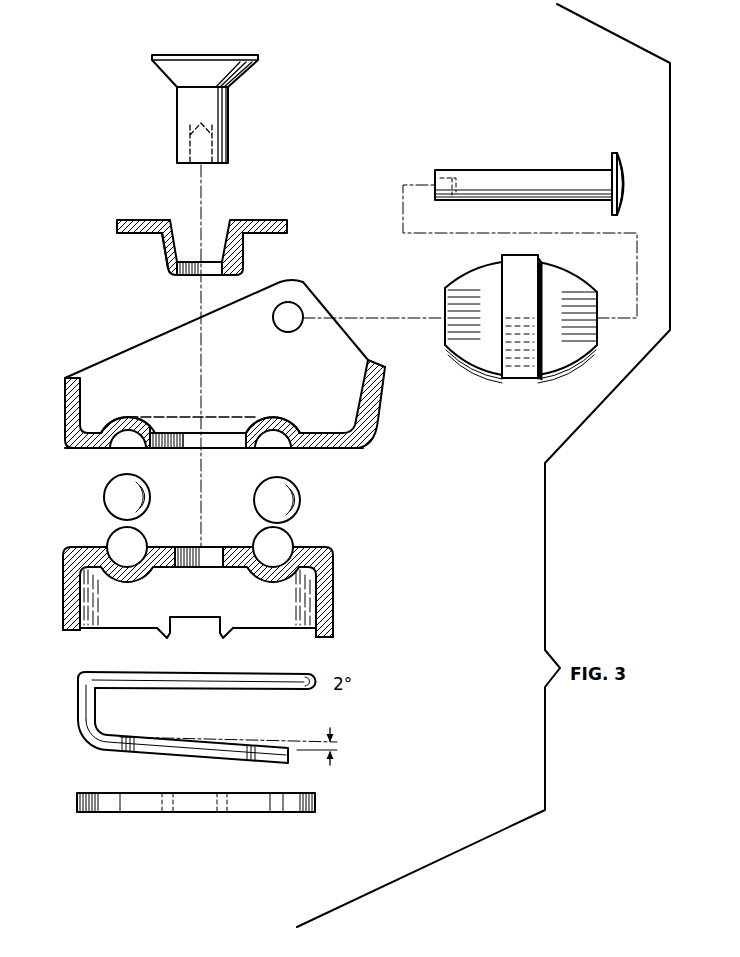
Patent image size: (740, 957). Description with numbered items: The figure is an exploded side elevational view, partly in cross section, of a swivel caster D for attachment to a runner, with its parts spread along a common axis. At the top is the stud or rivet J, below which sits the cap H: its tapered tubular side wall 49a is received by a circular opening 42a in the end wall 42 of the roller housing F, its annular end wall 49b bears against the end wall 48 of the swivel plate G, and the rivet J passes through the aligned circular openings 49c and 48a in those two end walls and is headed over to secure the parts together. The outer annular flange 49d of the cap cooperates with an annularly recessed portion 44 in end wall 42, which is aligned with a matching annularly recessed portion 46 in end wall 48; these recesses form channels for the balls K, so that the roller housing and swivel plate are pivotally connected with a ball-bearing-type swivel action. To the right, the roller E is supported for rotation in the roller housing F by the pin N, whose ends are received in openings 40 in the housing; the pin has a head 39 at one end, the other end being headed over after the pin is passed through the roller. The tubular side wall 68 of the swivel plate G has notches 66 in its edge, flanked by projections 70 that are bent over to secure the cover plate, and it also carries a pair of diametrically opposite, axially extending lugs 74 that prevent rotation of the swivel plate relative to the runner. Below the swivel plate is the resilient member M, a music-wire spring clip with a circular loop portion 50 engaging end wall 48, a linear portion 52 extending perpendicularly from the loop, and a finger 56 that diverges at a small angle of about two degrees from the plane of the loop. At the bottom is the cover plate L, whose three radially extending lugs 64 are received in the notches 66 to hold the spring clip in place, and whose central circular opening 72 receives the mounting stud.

The swivel caster D is at (462, 557).
The stud J is at (240, 50).
The cap H is at (188, 238).
The tapered tubular side wall 49a is at (162, 248).
The annular end wall 49b is at (172, 276).
The circular opening 49c is at (218, 278).
The outer annular flange 49d is at (140, 220).
The roller housing F is at (225, 370).
The openings 40 is at (293, 313).
The end wall 42 is at (320, 440).
The circular opening 42a is at (236, 432).
The annularly recessed portion 44 is at (290, 451).
The balls K is at (118, 494).
The swivel plate G is at (198, 586).
The annularly recessed portion 46 is at (292, 547).
The end wall 48 is at (330, 549).
The circular opening 48a is at (215, 547).
The tubular side wall 68 is at (333, 612).
The notches 66 is at (200, 618).
The projections 70 is at (163, 633).
The axially extending lugs 74 is at (63, 628).
The resilient member M is at (198, 718).
The circular loop portion 50 is at (312, 681).
The linear portion 52 is at (92, 716).
The end portion or finger 56 is at (121, 751).
The cover plate L is at (196, 811).
The radially extending lugs 64 is at (108, 812).
The circular opening 72 is at (165, 812).
The pin N is at (514, 169).
The head 39 is at (618, 168).
The roller E is at (463, 362).